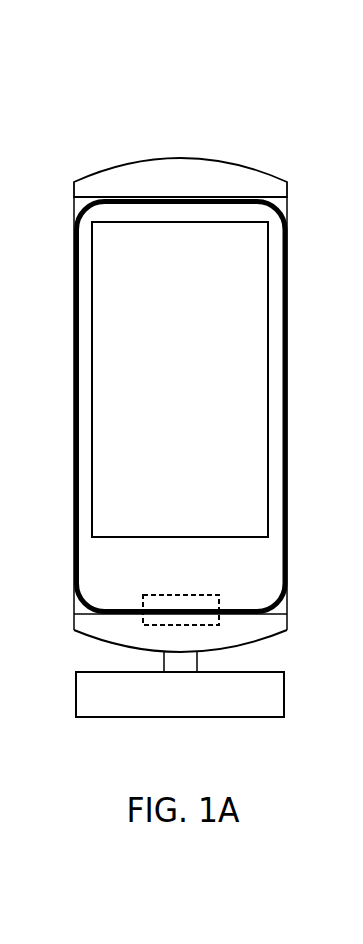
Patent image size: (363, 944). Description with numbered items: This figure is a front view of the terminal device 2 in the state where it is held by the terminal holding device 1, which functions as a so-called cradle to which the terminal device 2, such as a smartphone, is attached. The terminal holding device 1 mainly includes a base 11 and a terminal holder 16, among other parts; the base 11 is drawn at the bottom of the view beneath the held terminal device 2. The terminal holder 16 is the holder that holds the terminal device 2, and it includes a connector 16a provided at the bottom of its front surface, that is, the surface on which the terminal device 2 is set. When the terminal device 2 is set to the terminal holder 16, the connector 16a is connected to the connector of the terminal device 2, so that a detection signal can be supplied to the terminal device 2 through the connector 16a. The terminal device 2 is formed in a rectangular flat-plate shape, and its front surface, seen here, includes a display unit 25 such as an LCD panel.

The terminal holding device 1 is at (176, 134).
The terminal device 2 is at (299, 328).
The display unit 25 is at (253, 447).
The terminal holder 16 is at (237, 179).
The connector 16a is at (213, 608).
The base 11 is at (287, 695).